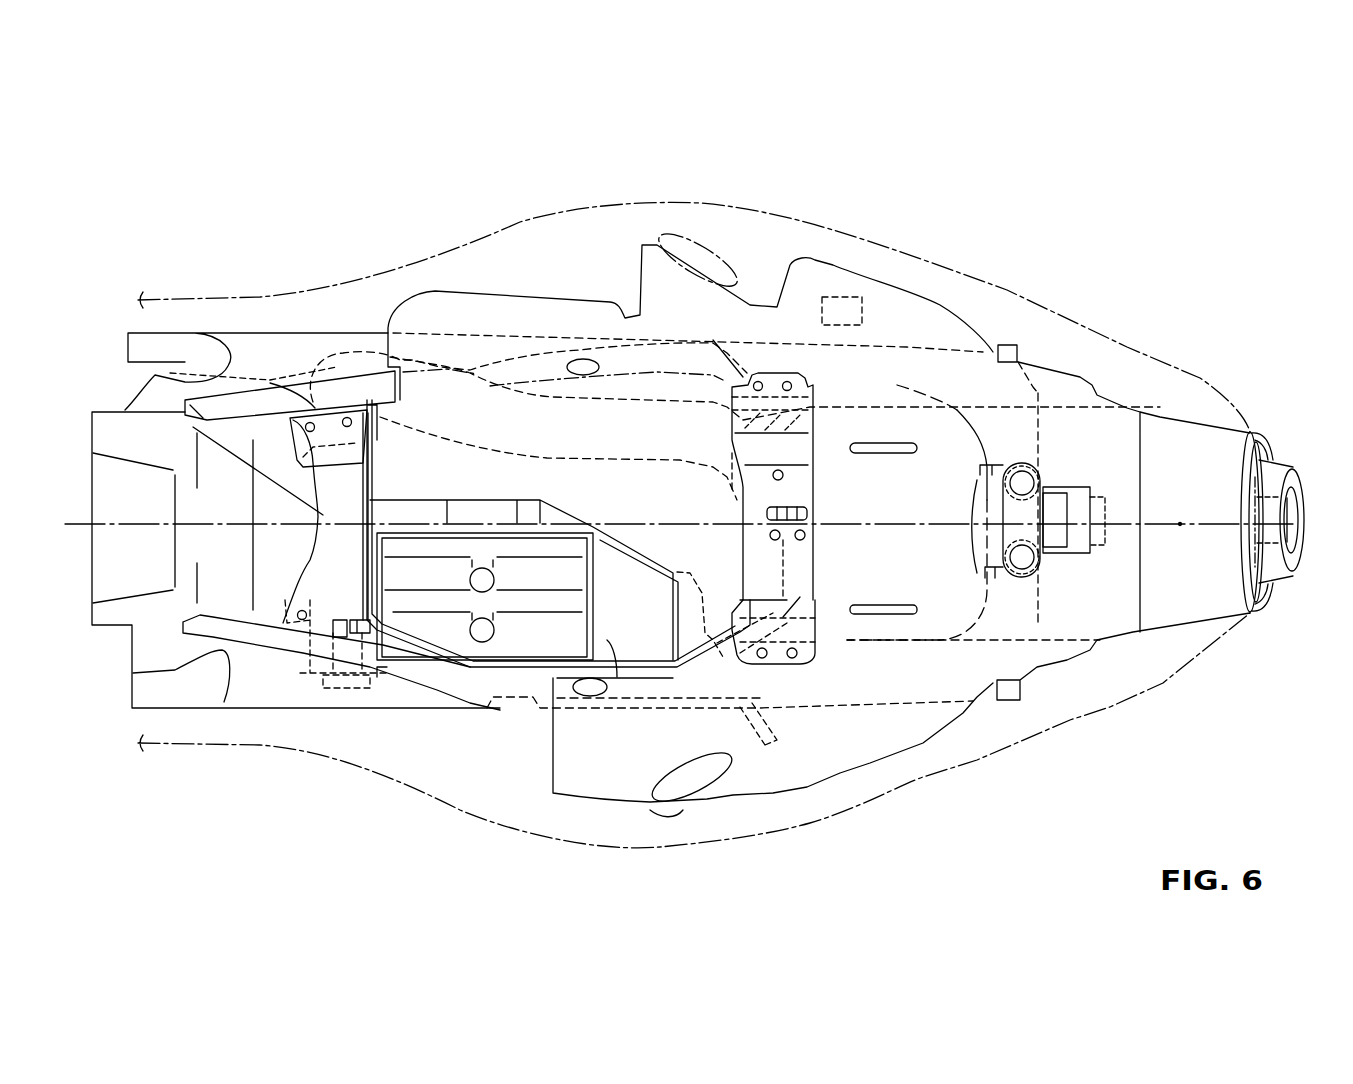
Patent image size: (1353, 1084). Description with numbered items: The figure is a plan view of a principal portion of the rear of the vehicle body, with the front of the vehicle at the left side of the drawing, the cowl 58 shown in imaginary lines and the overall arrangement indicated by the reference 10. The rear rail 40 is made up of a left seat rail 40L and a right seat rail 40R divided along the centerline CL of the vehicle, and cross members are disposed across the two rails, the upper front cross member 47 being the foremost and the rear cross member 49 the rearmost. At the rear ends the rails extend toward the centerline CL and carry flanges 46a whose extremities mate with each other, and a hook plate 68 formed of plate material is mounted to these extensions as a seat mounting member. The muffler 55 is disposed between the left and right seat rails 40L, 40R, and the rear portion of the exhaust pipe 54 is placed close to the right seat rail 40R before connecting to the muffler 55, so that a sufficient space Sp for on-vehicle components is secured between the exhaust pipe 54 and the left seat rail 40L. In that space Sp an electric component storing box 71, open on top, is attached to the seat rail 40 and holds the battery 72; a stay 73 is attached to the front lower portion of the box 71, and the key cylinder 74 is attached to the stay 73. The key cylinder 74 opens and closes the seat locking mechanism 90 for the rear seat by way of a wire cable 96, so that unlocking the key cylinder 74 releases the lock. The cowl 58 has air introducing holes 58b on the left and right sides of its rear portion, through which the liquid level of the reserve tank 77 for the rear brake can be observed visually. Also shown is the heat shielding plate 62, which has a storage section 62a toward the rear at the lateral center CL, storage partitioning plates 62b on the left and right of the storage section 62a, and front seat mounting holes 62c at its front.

The personal watercraft 10 is at (215, 260).
The rear rail 40 is at (270, 332).
The right seat rail 40R is at (313, 348).
The left seat rail 40L is at (242, 697).
The upper front cross member 47 is at (323, 515).
The exhaust pipe 54 is at (478, 382).
The cowl 58 is at (560, 212).
The air introducing hole 58b is at (705, 236).
The heat shielding plate 62 is at (1068, 375).
The storage section 62a is at (914, 549).
The storage partitioning plate 62b is at (893, 443).
The front seat mounting hole 62c is at (583, 359).
The reserve tank 77 is at (841, 297).
The rear cross member 49 is at (793, 491).
The flange 46a is at (1113, 517).
The hook plate 68 is at (1077, 533).
The muffler 55 is at (1200, 423).
The seat locking mechanism 90 is at (801, 555).
The wire cable 96 is at (428, 660).
The battery 72 is at (510, 648).
The electric component storing box 71 is at (617, 677).
The stay 73 is at (303, 683).
The key cylinder 74 is at (350, 690).
The space Sp is at (652, 540).
The centerline CL is at (1180, 524).